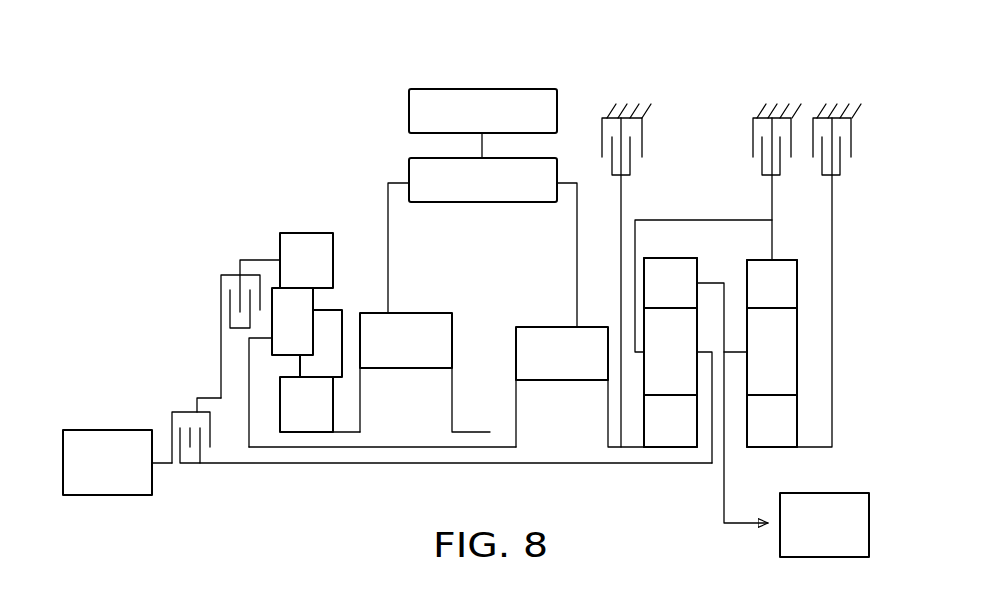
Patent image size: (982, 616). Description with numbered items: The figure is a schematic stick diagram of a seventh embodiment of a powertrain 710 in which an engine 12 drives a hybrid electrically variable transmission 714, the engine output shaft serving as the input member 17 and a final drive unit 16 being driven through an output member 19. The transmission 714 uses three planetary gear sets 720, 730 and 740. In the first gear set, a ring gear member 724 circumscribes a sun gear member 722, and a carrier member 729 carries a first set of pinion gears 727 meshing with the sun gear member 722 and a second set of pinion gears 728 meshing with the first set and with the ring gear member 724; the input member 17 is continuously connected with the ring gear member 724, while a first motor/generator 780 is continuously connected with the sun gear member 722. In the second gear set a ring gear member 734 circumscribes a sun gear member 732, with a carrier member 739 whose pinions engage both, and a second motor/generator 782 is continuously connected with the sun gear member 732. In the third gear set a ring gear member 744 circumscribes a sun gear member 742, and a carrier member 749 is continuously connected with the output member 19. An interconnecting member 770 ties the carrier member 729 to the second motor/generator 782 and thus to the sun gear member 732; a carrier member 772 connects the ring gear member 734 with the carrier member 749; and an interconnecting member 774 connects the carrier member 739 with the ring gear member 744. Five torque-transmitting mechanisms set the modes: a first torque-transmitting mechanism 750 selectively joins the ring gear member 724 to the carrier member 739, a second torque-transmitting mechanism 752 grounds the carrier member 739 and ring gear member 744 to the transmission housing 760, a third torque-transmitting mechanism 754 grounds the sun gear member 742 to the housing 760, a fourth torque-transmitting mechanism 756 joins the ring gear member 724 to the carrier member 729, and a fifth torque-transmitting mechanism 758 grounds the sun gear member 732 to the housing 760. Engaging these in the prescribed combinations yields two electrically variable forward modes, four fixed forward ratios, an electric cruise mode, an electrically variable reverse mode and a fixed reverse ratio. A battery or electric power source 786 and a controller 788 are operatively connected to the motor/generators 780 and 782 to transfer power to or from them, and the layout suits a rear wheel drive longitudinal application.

The engine 12 is at (115, 411).
The input member 17 is at (163, 466).
The output member 19 is at (747, 525).
The final drive unit 16 is at (822, 569).
The powertrain 710 is at (562, 70).
The transmission 714 is at (702, 78).
The planetary gear set 720 is at (270, 426).
The sun gear member 722 is at (290, 415).
The ring gear member 724 is at (290, 272).
The first set of pinion gears 727 is at (342, 372).
The second set of pinion gears 728 is at (276, 332).
The carrier member 729 is at (262, 340).
The planetary gear set 730 is at (668, 466).
The sun gear member 732 is at (654, 431).
The ring gear member 734 is at (654, 293).
The carrier member 739 is at (654, 362).
The planetary gear set 740 is at (806, 430).
The sun gear member 742 is at (756, 431).
The ring gear member 744 is at (756, 294).
The carrier member 749 is at (756, 362).
The first torque-transmitting mechanism 750 is at (203, 468).
The second torque-transmitting mechanism 752 is at (743, 146).
The third torque-transmitting mechanism 754 is at (810, 166).
The fourth torque-transmitting mechanism 756 is at (236, 341).
The fifth torque-transmitting mechanism 758 is at (599, 166).
The transmission housing 760 is at (642, 105).
The interconnecting member 770 is at (393, 448).
The carrier member 772 is at (713, 282).
The interconnecting member 774 is at (673, 219).
The first motor/generator 780 is at (418, 313).
The second motor/generator 782 is at (550, 327).
The electric power source 786 is at (409, 105).
The controller 788 is at (409, 167).